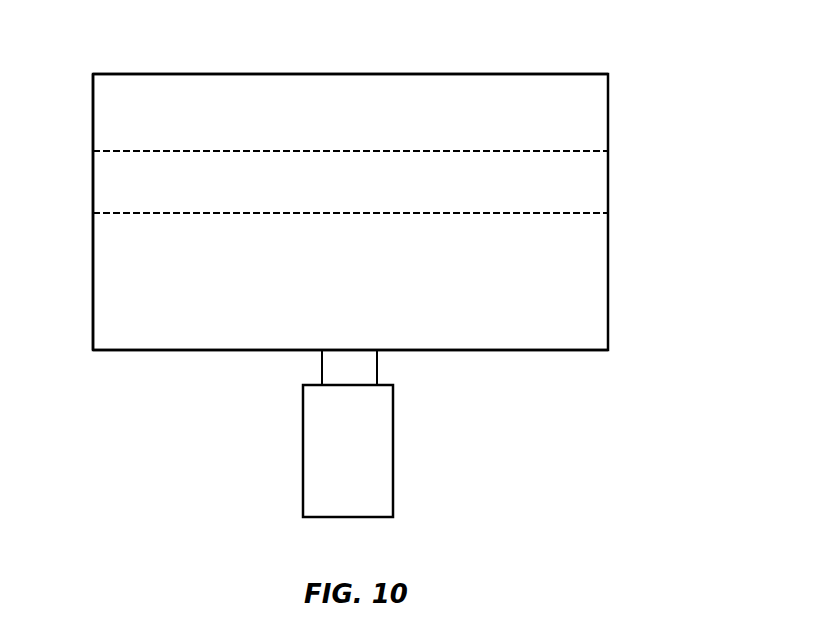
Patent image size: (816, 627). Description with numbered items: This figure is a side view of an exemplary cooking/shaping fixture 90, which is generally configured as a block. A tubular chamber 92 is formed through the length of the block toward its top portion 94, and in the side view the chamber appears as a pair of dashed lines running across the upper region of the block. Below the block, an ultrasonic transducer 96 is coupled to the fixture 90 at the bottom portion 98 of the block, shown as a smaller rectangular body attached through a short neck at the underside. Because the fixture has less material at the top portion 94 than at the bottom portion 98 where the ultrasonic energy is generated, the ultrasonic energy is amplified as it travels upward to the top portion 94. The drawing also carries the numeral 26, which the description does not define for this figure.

The fixture 90 is at (640, 148).
The tubular chamber 92 is at (393, 177).
The top portion 94 is at (155, 73).
The ultrasonic transducer 96 is at (393, 457).
The bottom portion 98 is at (195, 352).
The gas cylinder 26 is at (91, 282).